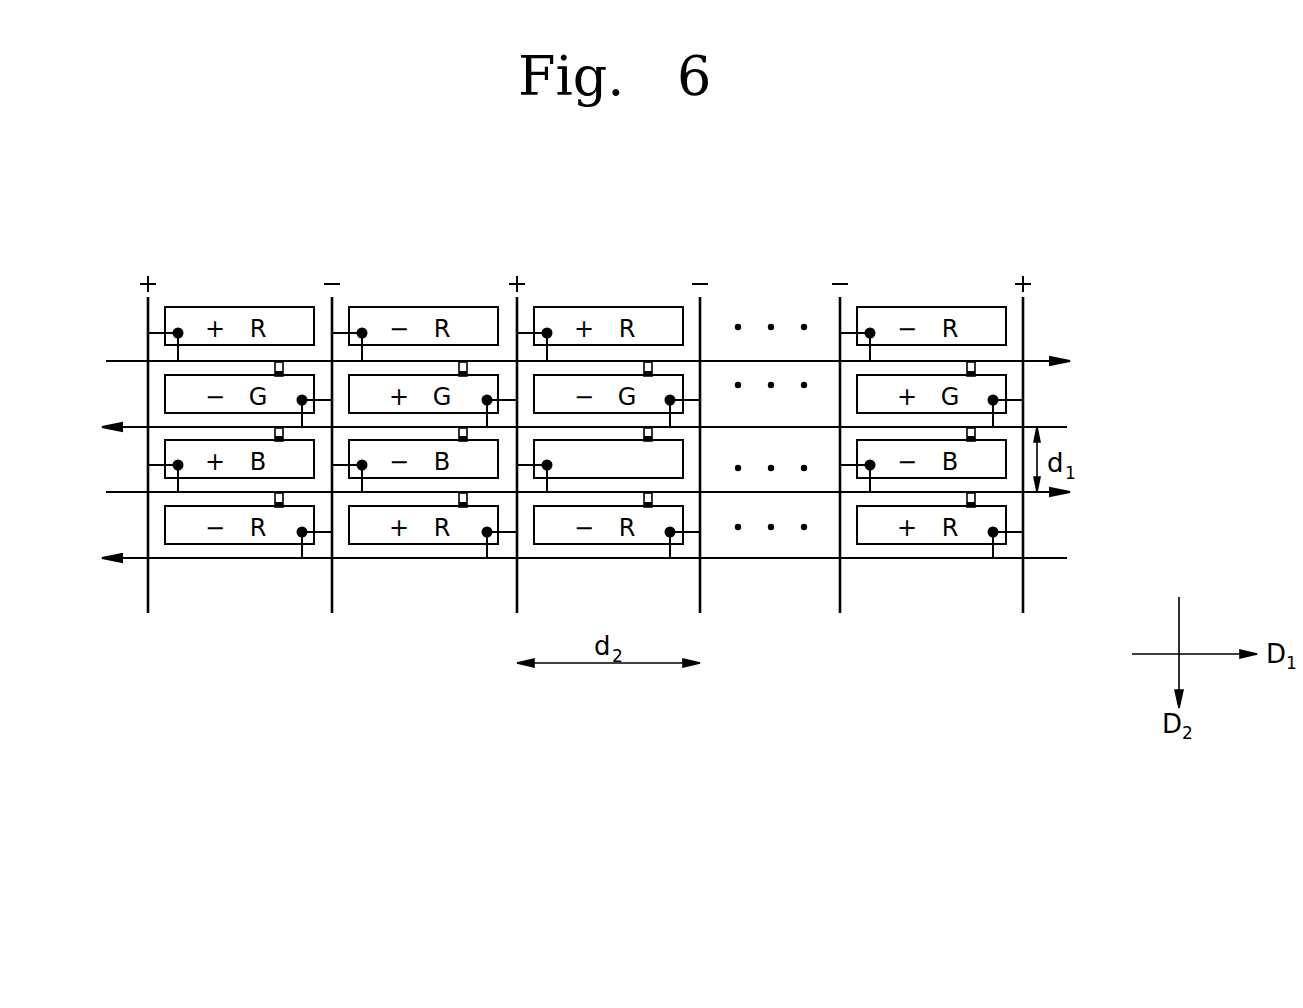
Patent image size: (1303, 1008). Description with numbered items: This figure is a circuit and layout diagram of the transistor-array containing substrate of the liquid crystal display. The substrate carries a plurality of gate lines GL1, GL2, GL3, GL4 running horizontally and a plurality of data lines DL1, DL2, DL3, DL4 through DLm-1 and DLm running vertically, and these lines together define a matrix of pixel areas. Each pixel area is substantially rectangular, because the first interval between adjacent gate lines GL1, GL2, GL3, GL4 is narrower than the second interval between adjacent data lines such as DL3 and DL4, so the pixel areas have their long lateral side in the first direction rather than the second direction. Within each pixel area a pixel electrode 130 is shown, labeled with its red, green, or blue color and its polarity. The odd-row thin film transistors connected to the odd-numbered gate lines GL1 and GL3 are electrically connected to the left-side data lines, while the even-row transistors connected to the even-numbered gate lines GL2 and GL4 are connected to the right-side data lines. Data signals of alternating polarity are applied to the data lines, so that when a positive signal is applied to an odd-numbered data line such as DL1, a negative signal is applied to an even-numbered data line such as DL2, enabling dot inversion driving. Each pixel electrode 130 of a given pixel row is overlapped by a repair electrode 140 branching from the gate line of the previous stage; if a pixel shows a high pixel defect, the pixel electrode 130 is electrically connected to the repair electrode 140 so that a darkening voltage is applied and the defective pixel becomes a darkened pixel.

The pixel electrode 130 is at (680, 452).
The repair electrode 140 is at (650, 436).
The first gate line GL1 is at (556, 363).
The second gate line GL2 is at (617, 428).
The third gate line GL3 is at (556, 494).
The fourth gate line GL4 is at (617, 559).
The first data line DL1 is at (148, 587).
The second data line DL2 is at (332, 587).
The third data line DL3 is at (517, 587).
The fourth data line DL4 is at (700, 587).
The (m-1)th data line DLm-1 is at (840, 587).
The m-th data line DLm is at (1023, 596).